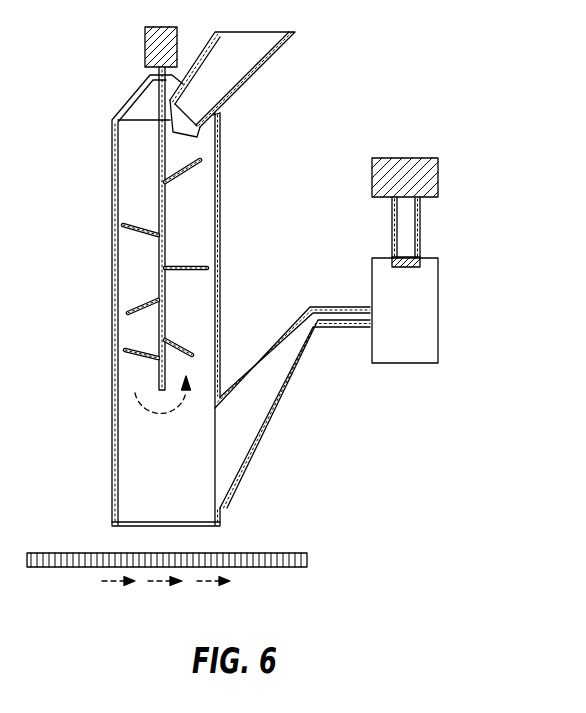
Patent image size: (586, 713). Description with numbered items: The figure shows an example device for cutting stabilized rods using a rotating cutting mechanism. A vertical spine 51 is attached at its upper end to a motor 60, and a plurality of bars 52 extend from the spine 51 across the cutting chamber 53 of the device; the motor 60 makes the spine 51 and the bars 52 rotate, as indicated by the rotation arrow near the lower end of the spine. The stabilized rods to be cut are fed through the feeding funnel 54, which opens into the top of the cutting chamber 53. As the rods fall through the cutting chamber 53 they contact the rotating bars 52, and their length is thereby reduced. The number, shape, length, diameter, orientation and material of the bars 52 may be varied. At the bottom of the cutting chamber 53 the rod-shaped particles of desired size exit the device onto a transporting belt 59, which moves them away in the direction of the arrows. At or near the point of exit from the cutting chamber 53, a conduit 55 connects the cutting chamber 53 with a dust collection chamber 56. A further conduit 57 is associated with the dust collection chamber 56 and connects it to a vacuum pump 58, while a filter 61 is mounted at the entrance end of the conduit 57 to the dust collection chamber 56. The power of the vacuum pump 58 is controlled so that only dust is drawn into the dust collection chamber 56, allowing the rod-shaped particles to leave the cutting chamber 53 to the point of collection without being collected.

The spine 51 is at (158, 258).
The bars 52 is at (182, 173).
The cutting chamber 53 is at (130, 183).
The feeding funnel 54 is at (250, 80).
The conduit 55 is at (270, 418).
The dust collection chamber 56 is at (403, 365).
The conduit 57 is at (420, 227).
The vacuum pump 58 is at (438, 177).
The transporting belt 59 is at (263, 567).
The motor 60 is at (145, 43).
The filter 61 is at (422, 262).